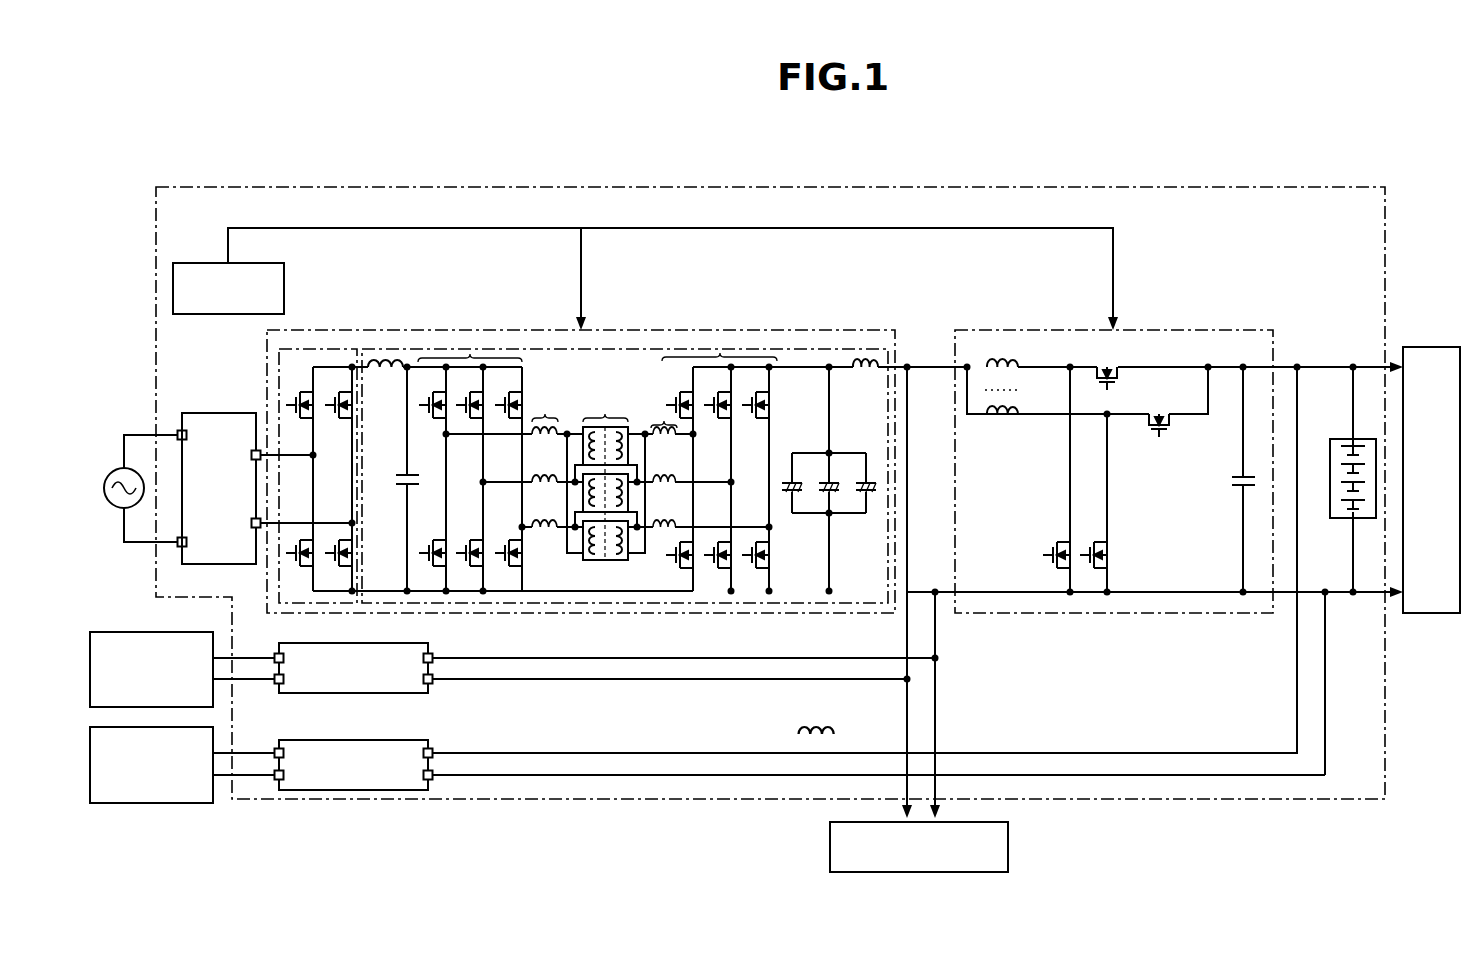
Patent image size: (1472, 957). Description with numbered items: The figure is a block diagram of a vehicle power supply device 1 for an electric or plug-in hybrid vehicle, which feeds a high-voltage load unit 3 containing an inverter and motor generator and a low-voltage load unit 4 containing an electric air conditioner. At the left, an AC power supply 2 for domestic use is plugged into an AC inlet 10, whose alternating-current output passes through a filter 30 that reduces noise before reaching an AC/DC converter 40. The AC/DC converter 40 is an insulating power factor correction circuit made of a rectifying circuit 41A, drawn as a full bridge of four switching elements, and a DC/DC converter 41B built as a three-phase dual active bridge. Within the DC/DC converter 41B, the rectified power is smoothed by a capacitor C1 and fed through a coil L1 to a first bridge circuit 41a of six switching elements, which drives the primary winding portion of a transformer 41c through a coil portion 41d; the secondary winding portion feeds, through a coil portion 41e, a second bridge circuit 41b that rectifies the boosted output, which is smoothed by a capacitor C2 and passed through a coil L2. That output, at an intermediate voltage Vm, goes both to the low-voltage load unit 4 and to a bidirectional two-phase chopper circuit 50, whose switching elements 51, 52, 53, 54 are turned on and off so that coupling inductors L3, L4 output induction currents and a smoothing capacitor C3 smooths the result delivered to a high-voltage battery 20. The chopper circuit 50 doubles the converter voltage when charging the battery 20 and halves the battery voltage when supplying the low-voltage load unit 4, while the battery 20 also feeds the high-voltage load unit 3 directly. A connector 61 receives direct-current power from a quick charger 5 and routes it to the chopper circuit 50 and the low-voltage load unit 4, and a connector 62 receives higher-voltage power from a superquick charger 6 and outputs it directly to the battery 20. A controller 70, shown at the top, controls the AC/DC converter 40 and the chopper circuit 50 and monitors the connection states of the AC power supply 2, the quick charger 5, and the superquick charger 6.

The vehicle power supply device 1 is at (830, 187).
The AC power supply 2 is at (110, 465).
The high-voltage load unit 3 is at (1435, 347).
The low-voltage load unit 4 is at (1008, 852).
The quick charger 5 is at (150, 632).
The superquick charger 6 is at (168, 803).
The AC inlet 10 is at (180, 430).
The high-voltage battery 20 is at (1336, 442).
The filter 30 is at (213, 413).
The AC/DC converter 40 is at (816, 330).
The rectifying circuit 41A is at (324, 349).
The first bridge circuit 41a is at (470, 354).
The DC/DC converter 41B is at (652, 349).
The second bridge circuit 41b is at (720, 353).
The transformer 41c is at (606, 477).
The coil portion 41d is at (546, 461).
The coil portion 41e is at (662, 421).
The bidirectional two-phase chopper circuit 50 is at (1126, 448).
The switching element 51 is at (1119, 372).
The switching element 52 is at (1171, 420).
The switching element 53 is at (1060, 548).
The switching element 54 is at (1100, 545).
The connector 61 is at (343, 643).
The connector 62 is at (345, 740).
The controller 70 is at (243, 263).
The coil L1 is at (382, 380).
The coil L2 is at (866, 378).
The coupling inductor L3 is at (1005, 355).
The coupling inductor L4 is at (1005, 425).
The capacitor C1 is at (390, 482).
The capacitor C2 is at (795, 453).
The smoothing capacitor C3 is at (1232, 480).
The intermediate voltage Vm is at (906, 722).